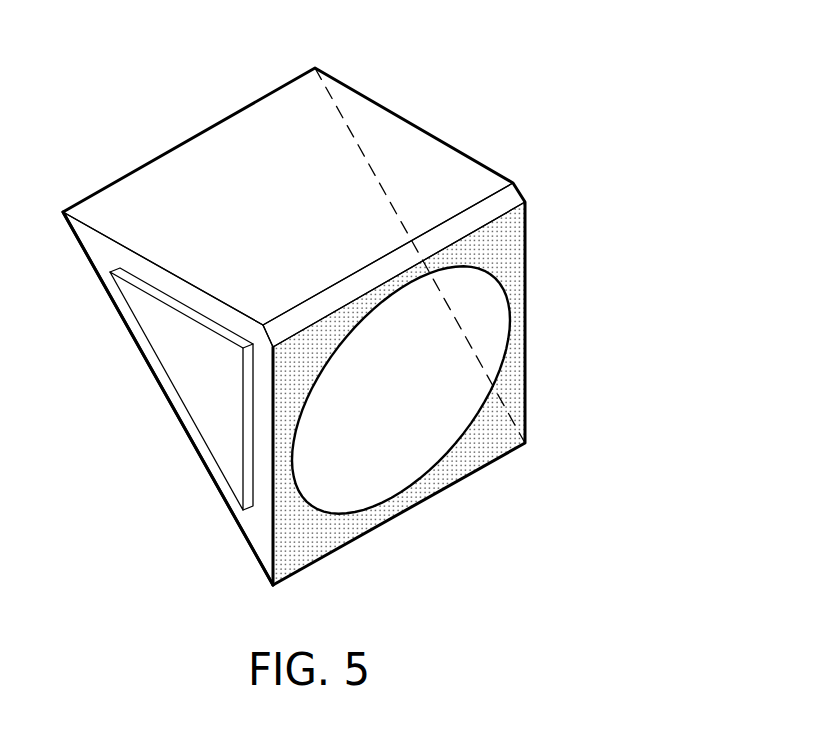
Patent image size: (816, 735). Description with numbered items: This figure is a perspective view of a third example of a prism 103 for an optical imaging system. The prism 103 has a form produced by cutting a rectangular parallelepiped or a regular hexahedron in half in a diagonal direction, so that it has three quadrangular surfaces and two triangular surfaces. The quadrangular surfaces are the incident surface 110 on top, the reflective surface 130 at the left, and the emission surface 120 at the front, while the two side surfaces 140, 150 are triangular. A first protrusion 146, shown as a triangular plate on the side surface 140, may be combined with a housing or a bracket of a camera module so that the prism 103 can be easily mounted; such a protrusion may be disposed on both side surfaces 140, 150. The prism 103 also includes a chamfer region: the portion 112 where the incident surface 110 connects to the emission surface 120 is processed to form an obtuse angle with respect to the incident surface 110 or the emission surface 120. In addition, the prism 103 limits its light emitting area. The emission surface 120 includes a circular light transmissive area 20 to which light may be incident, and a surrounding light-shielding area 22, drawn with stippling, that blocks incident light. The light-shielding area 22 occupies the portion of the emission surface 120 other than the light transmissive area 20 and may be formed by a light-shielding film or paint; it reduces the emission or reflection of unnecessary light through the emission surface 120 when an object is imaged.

The prism 103 is at (477, 104).
The incident surface 110 is at (330, 143).
The reflective surface 130 is at (183, 193).
The portion 112 is at (510, 200).
The side surface 150 is at (497, 267).
The light-shielding area 22 is at (518, 367).
The light transmissive area 20 is at (490, 415).
The emission surface 120 is at (410, 433).
The side surface 140 is at (257, 525).
The first protrusion 146 is at (195, 367).